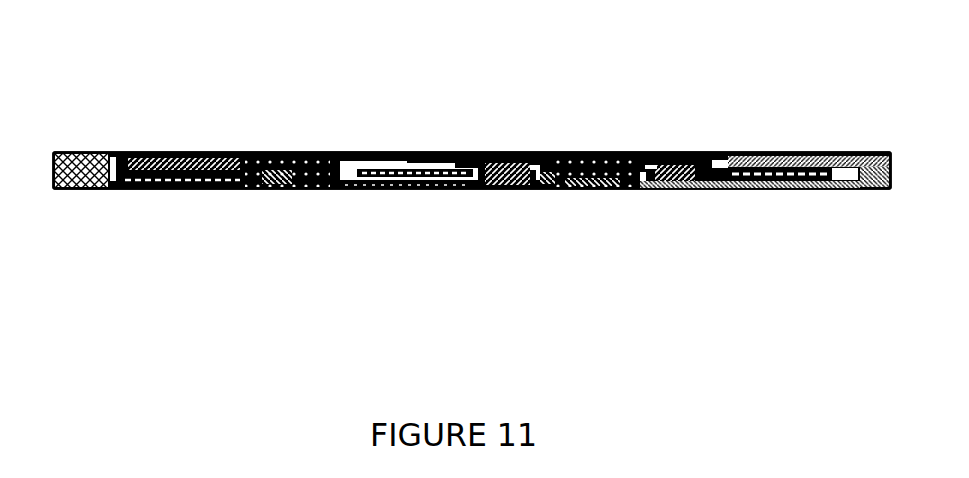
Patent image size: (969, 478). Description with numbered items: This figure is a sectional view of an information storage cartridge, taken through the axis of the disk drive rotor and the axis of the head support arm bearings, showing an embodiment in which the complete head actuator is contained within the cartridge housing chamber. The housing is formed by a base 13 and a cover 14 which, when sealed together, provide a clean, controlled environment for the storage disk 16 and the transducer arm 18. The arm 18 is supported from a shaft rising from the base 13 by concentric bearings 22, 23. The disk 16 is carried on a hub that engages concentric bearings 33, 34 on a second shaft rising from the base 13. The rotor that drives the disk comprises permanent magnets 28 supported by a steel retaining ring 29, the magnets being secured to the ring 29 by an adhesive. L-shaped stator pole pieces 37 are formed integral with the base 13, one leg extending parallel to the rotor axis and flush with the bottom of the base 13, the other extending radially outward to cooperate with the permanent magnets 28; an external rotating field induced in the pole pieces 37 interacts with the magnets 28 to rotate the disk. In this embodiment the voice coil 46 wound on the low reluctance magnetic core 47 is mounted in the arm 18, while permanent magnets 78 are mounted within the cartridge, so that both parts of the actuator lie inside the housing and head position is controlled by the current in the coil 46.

The base 13 is at (740, 190).
The cover 14 is at (812, 152).
The storage disk 16 is at (383, 190).
The transducer arm 18 is at (400, 152).
The concentric bearing 22 is at (338, 152).
The concentric bearing 23 is at (295, 210).
The permanent magnets 28 is at (503, 190).
The steel retaining ring 29 is at (490, 152).
The concentric bearing 33 is at (595, 220).
The concentric bearing 34 is at (632, 190).
The L-shaped stator pole pieces 37 is at (682, 152).
The voice coil 46 is at (236, 190).
The low reluctance magnetic core 47 is at (143, 152).
The permanent magnets 78 is at (127, 190).